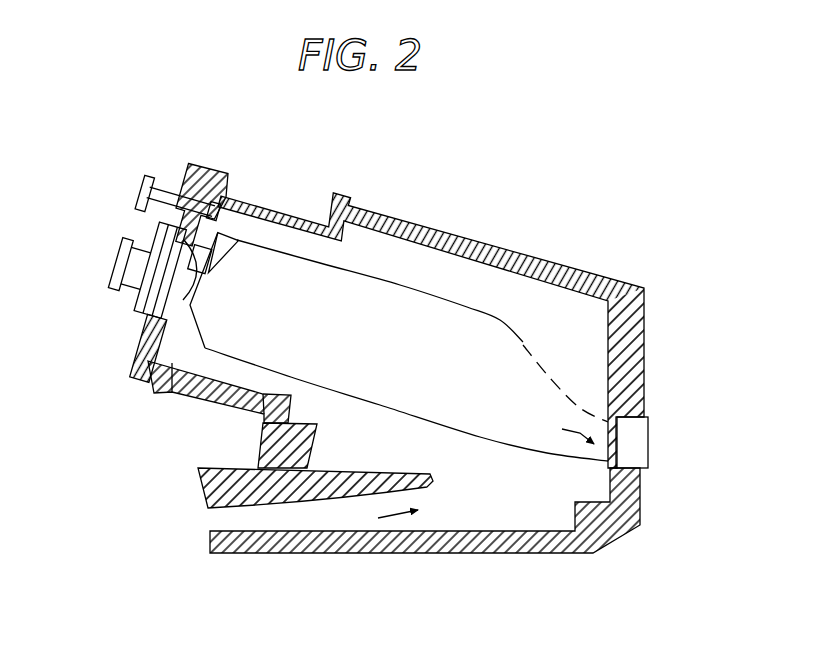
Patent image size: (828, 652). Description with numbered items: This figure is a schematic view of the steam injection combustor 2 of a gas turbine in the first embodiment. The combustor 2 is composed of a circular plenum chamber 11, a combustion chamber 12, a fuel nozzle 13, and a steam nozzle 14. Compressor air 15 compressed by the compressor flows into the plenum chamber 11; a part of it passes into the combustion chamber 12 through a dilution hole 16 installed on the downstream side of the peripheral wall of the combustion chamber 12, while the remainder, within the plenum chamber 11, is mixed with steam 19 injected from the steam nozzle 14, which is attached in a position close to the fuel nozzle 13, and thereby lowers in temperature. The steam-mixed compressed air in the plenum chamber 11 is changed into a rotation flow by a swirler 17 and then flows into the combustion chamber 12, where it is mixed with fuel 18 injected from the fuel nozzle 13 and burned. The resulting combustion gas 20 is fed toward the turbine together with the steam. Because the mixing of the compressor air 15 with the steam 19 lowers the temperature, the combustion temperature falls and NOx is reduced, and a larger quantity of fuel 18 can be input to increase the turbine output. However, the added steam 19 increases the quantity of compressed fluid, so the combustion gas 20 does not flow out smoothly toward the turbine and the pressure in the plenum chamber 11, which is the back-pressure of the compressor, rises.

The combustor 2 is at (348, 160).
The plenum chamber 11 is at (387, 247).
The combustion chamber 12 is at (440, 345).
The fuel nozzle 13 is at (140, 309).
The steam nozzle 14 is at (173, 182).
The compressor air 15 is at (397, 520).
The dilution hole 16 is at (523, 343).
The swirler 17 is at (189, 303).
The fuel 18 is at (112, 256).
The steam 19 is at (137, 185).
The combustion gas 20 is at (600, 415).